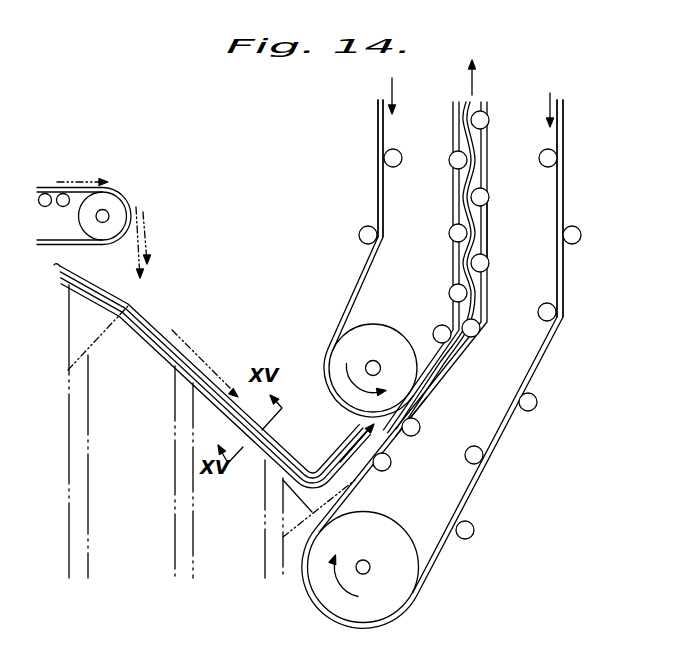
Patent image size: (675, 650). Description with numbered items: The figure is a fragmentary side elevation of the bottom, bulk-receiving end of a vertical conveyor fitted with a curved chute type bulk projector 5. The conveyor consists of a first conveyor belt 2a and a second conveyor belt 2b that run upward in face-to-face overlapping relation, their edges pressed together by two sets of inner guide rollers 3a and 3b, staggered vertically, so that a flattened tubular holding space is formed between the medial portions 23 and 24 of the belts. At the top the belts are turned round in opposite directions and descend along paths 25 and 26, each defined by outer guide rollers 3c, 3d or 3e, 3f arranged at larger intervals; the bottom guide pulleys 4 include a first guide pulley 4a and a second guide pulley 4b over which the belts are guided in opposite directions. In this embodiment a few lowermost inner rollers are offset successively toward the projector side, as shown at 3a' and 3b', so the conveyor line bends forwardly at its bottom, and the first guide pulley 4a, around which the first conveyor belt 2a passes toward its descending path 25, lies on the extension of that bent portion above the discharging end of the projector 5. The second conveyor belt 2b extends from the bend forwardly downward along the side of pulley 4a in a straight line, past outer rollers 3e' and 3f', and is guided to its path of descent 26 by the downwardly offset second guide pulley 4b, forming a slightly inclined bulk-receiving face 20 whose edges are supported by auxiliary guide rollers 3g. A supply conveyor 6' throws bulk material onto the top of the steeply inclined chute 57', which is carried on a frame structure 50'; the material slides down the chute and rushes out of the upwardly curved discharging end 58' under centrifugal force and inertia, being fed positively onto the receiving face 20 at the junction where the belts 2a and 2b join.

The first conveyor belt 2a is at (362, 153).
The second conveyor belt 2b is at (576, 117).
The inner guide rollers 3a is at (452, 152).
The inner guide rollers 3b is at (488, 186).
The outer guide roller 3c is at (362, 228).
The outer guide roller 3d is at (388, 150).
The outer guide roller 3e is at (578, 228).
The outer guide roller 3f is at (556, 155).
The offset lowermost inner guide rollers 3a' is at (424, 318).
The offset lowermost inner guide rollers 3b' is at (491, 327).
The outer guide roller 3e' is at (522, 464).
The outer guide roller 3f' is at (477, 430).
The auxiliary guide rollers 3g is at (420, 430).
The guide pulleys 4 is at (296, 331).
The first guide pulley 4a is at (358, 322).
The second guide pulley 4b is at (420, 558).
The bulk projector 5 is at (211, 302).
The supply conveyor 6' is at (94, 212).
The bulk-receiving face 20 is at (390, 447).
The medial portion of first conveyor belt 23 is at (452, 222).
The medial portion of second conveyor belt 24 is at (485, 232).
The descending path of first conveyor belt 25 is at (378, 182).
The descending path of second conveyor belt 26 is at (566, 182).
The frame structure 50' is at (192, 431).
The chute 57' is at (212, 376).
The bulk discharging end 58' is at (343, 438).